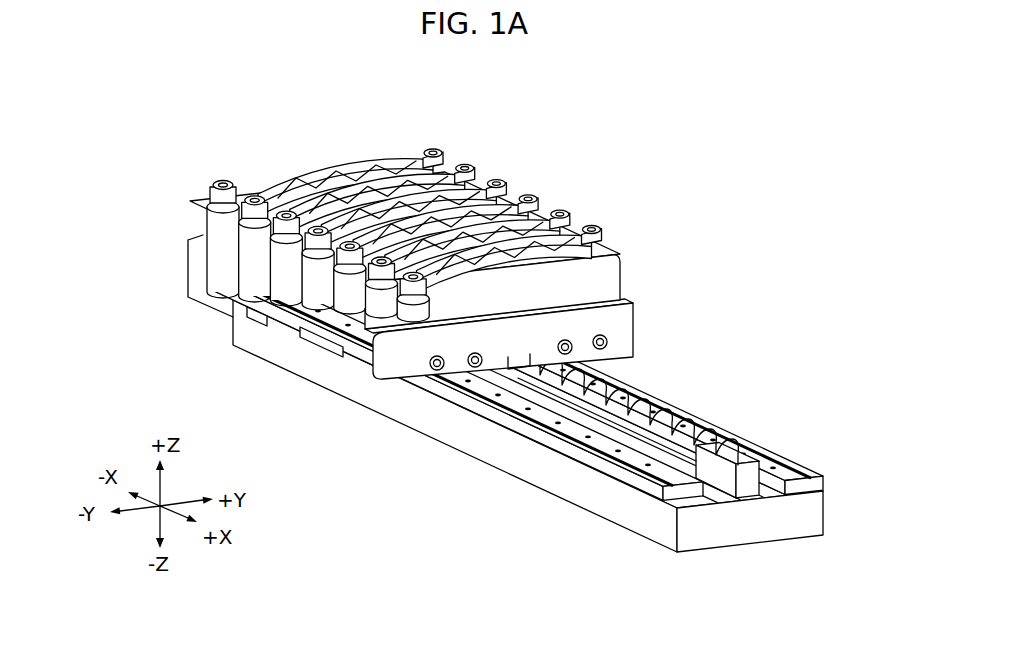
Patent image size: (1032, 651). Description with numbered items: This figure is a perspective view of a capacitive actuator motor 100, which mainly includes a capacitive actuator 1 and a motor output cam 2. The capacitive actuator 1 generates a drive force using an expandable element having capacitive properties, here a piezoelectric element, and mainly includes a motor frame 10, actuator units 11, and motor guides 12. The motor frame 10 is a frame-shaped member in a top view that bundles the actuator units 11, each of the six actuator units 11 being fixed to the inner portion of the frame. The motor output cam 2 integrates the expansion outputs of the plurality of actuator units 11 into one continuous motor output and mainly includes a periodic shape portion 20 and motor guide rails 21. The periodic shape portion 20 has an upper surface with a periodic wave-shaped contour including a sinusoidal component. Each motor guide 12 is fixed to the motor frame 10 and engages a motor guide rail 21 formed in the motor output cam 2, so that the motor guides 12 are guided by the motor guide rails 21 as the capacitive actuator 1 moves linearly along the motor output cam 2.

The capacitive actuator motor 100 is at (799, 166).
The capacitive actuator 1 is at (440, 275).
The motor output cam 2 is at (540, 415).
The motor frame 10 is at (638, 319).
The actuator units 11 is at (393, 315).
The motor guides 12 is at (353, 357).
The periodic shape portion 20 is at (717, 440).
The motor guide rails 21 is at (667, 402).